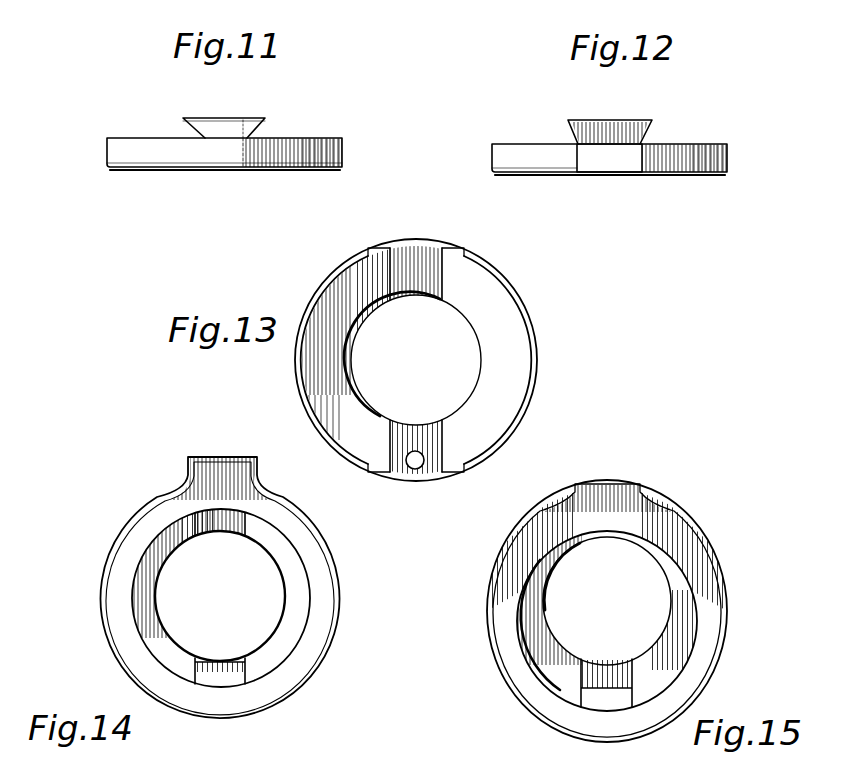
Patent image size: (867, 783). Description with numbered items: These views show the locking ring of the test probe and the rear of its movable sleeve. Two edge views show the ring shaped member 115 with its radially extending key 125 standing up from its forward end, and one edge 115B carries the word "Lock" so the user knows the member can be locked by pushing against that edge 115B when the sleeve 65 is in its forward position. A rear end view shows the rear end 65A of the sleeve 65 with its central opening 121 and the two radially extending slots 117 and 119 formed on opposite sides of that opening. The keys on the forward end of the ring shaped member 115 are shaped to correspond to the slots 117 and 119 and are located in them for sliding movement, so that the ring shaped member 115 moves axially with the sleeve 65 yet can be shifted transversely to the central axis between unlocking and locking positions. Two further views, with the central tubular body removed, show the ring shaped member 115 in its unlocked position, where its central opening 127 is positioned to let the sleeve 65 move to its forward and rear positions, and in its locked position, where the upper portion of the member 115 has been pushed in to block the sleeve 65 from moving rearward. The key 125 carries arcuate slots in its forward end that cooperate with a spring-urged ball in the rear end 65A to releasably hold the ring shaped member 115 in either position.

In FIG. 11, the ring shaped member 115 is at (123, 155).
In FIG. 12, the ring shaped member 115 is at (503, 160).
In FIG. 14, the ring shaped member 115 is at (115, 652).
In FIG. 15, the ring shaped member 115 is at (570, 720).
In FIG. 12, the edge of the ring shaped member 115B is at (612, 178).
In FIG. 11, the radially extending slot 117 is at (224, 128).
In FIG. 12, the radially extending slot 117 is at (610, 132).
In FIG. 13, the radially extending slot 117 is at (430, 260).
In FIG. 14, the radially extending slot 117 is at (234, 524).
In FIG. 13, the sleeve 65 is at (512, 283).
In FIG. 14, the sleeve 65 is at (221, 598).
In FIG. 15, the sleeve 65 is at (607, 621).
In FIG. 13, the rear end of the sleeve 65A is at (325, 372).
In FIG. 14, the rear end of the sleeve 65A is at (150, 560).
In FIG. 15, the rear end of the sleeve 65A is at (530, 612).
In FIG. 13, the central opening of the sleeve 121 is at (455, 330).
In FIG. 14, the central opening of the sleeve 121 is at (195, 608).
In FIG. 15, the central opening of the sleeve 121 is at (645, 570).
In FIG. 13, the radially extending slot 119 is at (425, 470).
In FIG. 15, the radially extending slot 119 is at (606, 682).
In FIG. 14, the central opening of the ring shaped member 127 is at (303, 616).
In FIG. 15, the central opening of the ring shaped member 127 is at (676, 678).
In FIG. 14, the radially extending key 125 is at (224, 678).